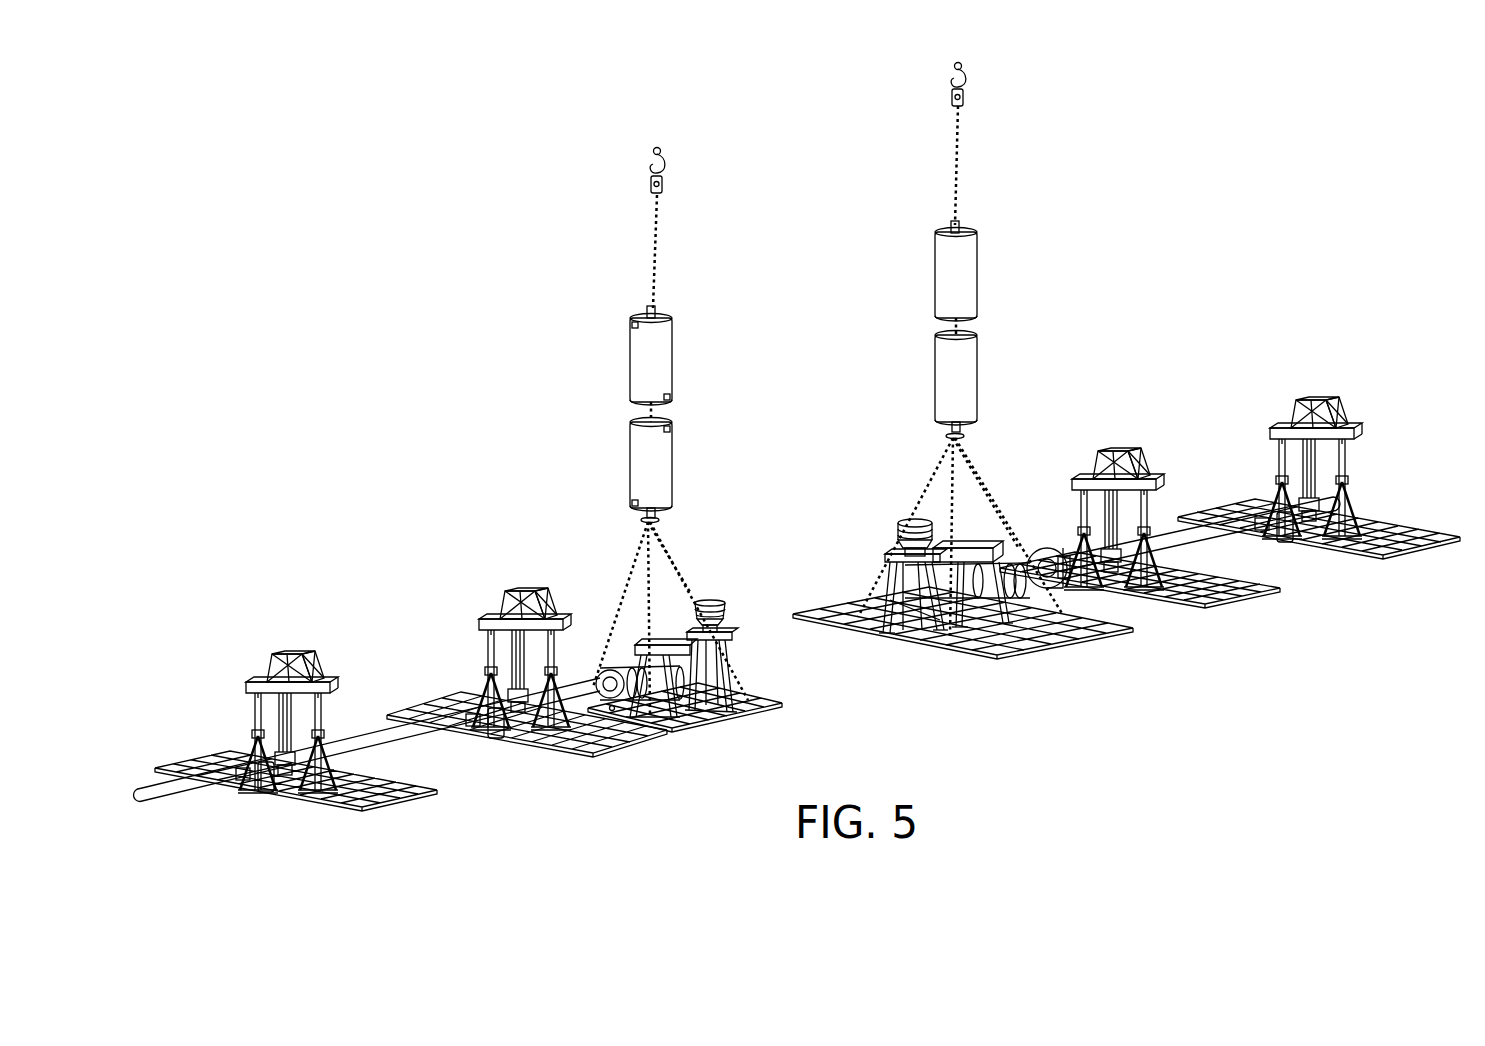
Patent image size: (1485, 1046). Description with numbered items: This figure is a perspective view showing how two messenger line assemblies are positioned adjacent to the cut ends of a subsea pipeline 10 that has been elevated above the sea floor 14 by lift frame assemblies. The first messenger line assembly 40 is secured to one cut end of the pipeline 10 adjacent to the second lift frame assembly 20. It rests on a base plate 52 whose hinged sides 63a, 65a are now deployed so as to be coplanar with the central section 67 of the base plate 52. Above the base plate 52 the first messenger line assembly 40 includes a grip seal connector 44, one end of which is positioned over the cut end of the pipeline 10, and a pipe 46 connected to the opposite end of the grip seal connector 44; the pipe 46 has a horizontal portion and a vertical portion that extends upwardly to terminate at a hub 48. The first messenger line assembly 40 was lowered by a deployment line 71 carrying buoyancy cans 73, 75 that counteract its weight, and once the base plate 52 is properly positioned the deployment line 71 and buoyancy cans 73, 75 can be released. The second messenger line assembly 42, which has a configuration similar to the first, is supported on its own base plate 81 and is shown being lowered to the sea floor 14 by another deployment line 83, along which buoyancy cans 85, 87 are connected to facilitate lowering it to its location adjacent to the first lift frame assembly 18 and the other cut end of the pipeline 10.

The subsea pipeline 10 is at (425, 737).
The sea floor 14 is at (1356, 581).
The first lift frame assembly 18 is at (630, 740).
The second lift frame assembly 20 is at (1257, 583).
The first messenger line assembly 40 is at (962, 587).
The second messenger line assembly 42 is at (722, 596).
The grip seal connector 44 is at (1014, 545).
The pipe 46 is at (927, 594).
The hub 48 is at (902, 520).
The base plate 52 is at (900, 633).
The hinged side 63a is at (823, 625).
The hinged side 65a is at (1034, 648).
The central section 67 is at (932, 642).
The deployment line 71 is at (962, 147).
The buoyancy can 73 is at (974, 271).
The buoyancy can 75 is at (974, 370).
The base plate 81 is at (685, 648).
The deployment line 83 is at (660, 230).
The buoyancy can 85 is at (668, 354).
The buoyancy can 87 is at (668, 453).